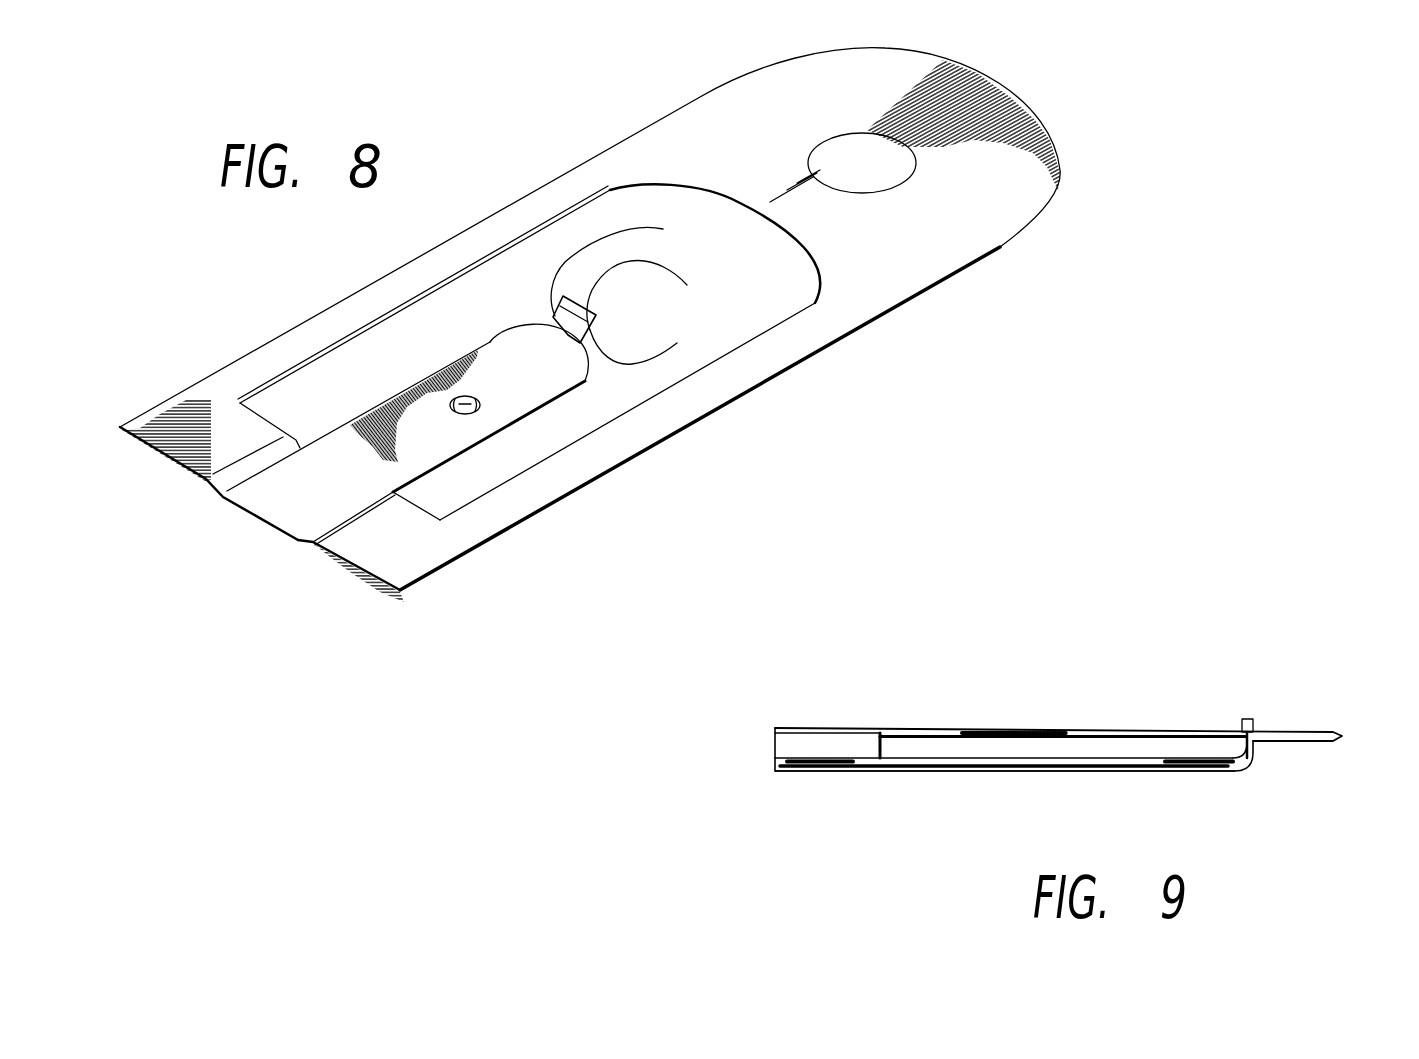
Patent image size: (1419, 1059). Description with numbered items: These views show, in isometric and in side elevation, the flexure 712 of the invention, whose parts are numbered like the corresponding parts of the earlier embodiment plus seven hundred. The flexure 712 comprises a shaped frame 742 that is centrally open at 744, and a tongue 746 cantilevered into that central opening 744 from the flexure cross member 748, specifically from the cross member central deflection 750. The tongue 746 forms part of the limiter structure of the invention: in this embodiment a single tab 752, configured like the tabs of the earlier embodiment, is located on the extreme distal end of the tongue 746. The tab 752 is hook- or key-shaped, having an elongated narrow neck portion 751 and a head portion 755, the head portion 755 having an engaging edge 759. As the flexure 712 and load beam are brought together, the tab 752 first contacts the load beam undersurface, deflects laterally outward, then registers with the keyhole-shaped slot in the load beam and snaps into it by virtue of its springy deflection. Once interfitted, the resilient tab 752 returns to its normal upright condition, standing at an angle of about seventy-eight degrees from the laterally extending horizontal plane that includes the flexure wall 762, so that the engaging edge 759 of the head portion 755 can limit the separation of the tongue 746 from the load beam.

In FIG. 8, the flexure 712 is at (947, 268).
In FIG. 9, the flexure 712 is at (1320, 743).
In FIG. 8, the shaped frame 742 is at (567, 474).
In FIG. 9, the shaped frame 742 is at (1155, 729).
In FIG. 8, the central opening 744 is at (767, 310).
In FIG. 8, the tongue 746 is at (500, 365).
In FIG. 9, the tongue 746 is at (1038, 746).
In FIG. 8, the flexure cross member 748 is at (370, 572).
In FIG. 9, the flexure cross member 748 is at (775, 748).
In FIG. 8, the cross member central deflection 750 is at (283, 510).
In FIG. 9, the cross member central deflection 750 is at (808, 745).
In FIG. 8, the neck portion 751 is at (654, 342).
In FIG. 8, the tab 752 is at (661, 295).
In FIG. 9, the tab 752 is at (1250, 754).
In FIG. 8, the head portion 755 is at (631, 264).
In FIG. 9, the head portion 755 is at (1248, 719).
In FIG. 8, the engaging edge 759 is at (553, 318).
In FIG. 8, the flexure wall 762 is at (953, 244).